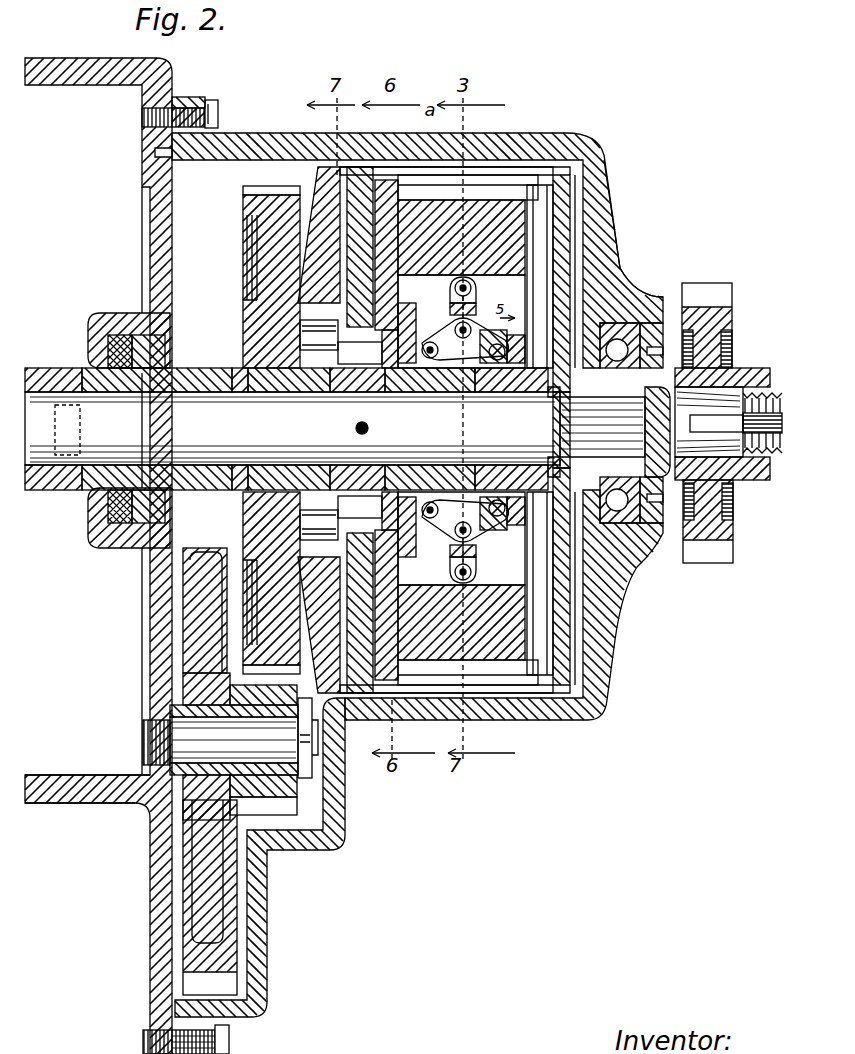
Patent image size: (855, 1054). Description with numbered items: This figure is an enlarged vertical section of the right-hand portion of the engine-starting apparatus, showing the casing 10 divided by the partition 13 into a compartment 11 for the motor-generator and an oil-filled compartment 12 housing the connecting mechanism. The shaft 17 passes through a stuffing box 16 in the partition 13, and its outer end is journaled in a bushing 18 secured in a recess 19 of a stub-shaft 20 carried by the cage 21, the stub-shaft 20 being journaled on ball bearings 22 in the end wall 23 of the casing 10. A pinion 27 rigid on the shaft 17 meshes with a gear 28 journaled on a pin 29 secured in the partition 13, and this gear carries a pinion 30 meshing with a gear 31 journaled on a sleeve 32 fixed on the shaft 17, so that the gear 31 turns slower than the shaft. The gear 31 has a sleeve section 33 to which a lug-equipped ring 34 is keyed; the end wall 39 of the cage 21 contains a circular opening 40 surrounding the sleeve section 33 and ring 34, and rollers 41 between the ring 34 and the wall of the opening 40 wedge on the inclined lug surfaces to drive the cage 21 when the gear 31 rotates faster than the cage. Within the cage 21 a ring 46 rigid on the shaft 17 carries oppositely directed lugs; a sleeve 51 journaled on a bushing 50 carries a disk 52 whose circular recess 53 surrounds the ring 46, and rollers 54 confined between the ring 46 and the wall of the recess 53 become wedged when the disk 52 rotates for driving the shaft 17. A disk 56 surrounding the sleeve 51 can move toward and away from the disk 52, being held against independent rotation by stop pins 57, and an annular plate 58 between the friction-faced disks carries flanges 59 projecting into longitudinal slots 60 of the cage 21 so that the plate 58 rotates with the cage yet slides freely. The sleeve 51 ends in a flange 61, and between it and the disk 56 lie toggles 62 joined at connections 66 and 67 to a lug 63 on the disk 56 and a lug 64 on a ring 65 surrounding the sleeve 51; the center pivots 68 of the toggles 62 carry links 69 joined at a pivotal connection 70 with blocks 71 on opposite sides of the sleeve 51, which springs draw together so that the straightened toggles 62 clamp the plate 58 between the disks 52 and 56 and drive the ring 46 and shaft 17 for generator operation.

The casing 10 is at (62, 57).
The compartment 11 is at (87, 733).
The compartment 12 is at (228, 168).
The partition 13 is at (150, 253).
The stuffing box 16 is at (88, 505).
The shaft 17 is at (292, 428).
The bushing 18 is at (600, 462).
The recess 19 is at (675, 436).
The stub-shaft 20 is at (665, 487).
The cage 21 is at (582, 655).
The ball bearings 22 is at (655, 300).
The end wall 23 is at (606, 240).
The pinion 27 is at (200, 362).
The gear 28 is at (200, 583).
The pin 29 is at (190, 732).
The pinion 30 is at (325, 800).
The gear 31 is at (250, 197).
The sleeve 32 is at (245, 395).
The sleeve section 33 is at (292, 395).
The ring 34 is at (253, 429).
The end wall 39 is at (325, 180).
The circular opening 40 is at (272, 280).
The rollers 41 is at (319, 424).
The ring 46 is at (343, 470).
The bushing 50 is at (503, 392).
The sleeve 51 is at (564, 432).
The disk 52 is at (425, 215).
The circular recess 53 is at (348, 392).
The rollers 54 is at (335, 470).
The disk 56 is at (403, 183).
The stop pins 57 is at (390, 195).
The annular plate 58 is at (461, 237).
The flanges 59 is at (372, 700).
The slots 60 is at (518, 697).
The flange 61 is at (590, 330).
The toggles 62 is at (490, 540).
The lug 63 is at (435, 545).
The lug 64 is at (466, 340).
The ring 65 is at (520, 520).
The connection 66 is at (430, 342).
The connection 67 is at (507, 340).
The center pivots 68 is at (474, 353).
The links 69 is at (462, 580).
The pivotal connection 70 is at (465, 280).
The blocks 71 is at (500, 655).